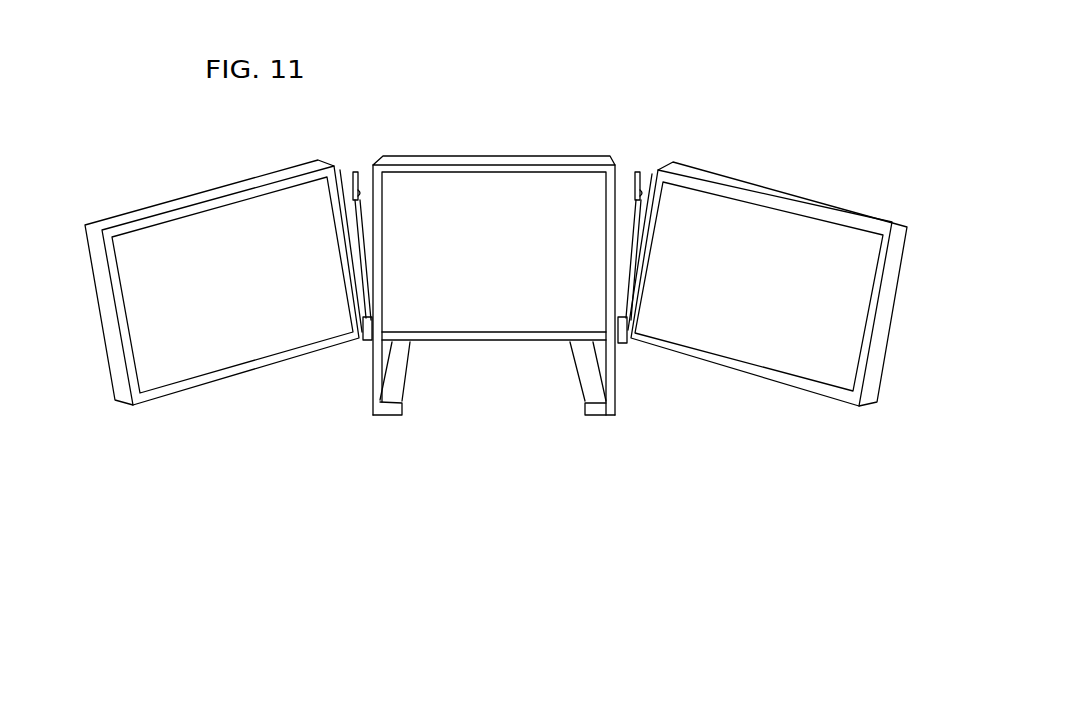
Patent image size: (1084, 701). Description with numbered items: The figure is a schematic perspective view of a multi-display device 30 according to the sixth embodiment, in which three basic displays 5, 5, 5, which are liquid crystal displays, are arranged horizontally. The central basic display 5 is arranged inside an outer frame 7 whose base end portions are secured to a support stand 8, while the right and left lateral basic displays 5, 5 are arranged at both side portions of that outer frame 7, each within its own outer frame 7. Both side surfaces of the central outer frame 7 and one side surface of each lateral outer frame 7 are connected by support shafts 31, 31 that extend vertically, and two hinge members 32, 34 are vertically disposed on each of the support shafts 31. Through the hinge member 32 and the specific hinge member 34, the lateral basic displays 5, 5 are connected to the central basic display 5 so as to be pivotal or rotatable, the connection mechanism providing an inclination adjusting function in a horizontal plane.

The multi-display device 30 is at (478, 135).
The outer frame 7 is at (107, 307).
The basic display 5 is at (228, 338).
The support stand 8 is at (398, 378).
The support shaft 31 is at (356, 172).
The hinge member 32 is at (625, 177).
The specific hinge member 34 is at (620, 342).